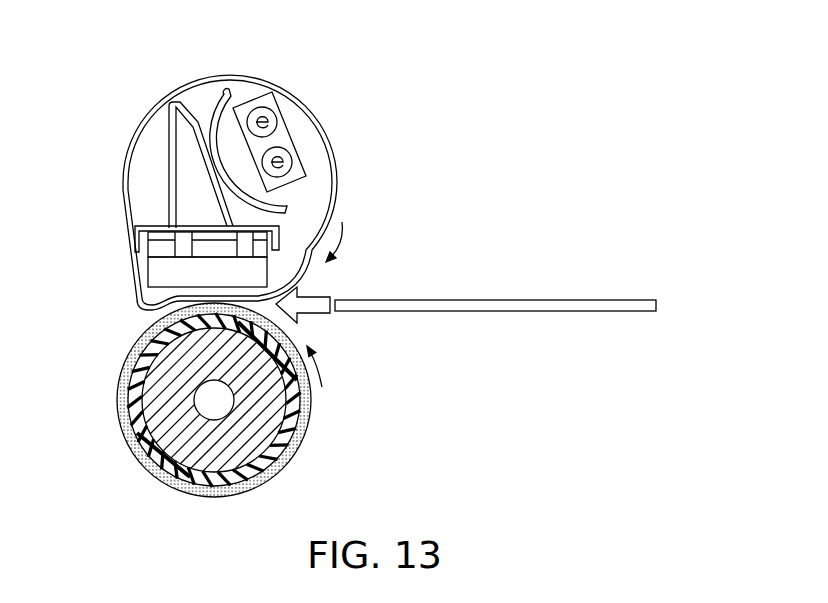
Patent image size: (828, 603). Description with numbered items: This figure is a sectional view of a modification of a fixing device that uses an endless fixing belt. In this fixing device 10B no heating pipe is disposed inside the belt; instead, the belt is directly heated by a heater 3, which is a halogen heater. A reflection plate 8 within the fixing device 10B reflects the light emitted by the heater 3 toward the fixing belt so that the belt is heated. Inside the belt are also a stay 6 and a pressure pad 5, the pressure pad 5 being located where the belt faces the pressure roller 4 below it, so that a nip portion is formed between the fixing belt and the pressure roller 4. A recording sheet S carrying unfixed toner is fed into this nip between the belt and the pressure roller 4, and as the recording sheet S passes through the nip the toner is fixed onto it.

The fixing device 10B is at (400, 142).
The heater 3 is at (288, 136).
The pressure roller 4 is at (303, 437).
The pressure pad 5 is at (155, 273).
The stay 6 is at (168, 153).
The reflection plate 8 is at (229, 88).
The recording sheet S is at (490, 311).